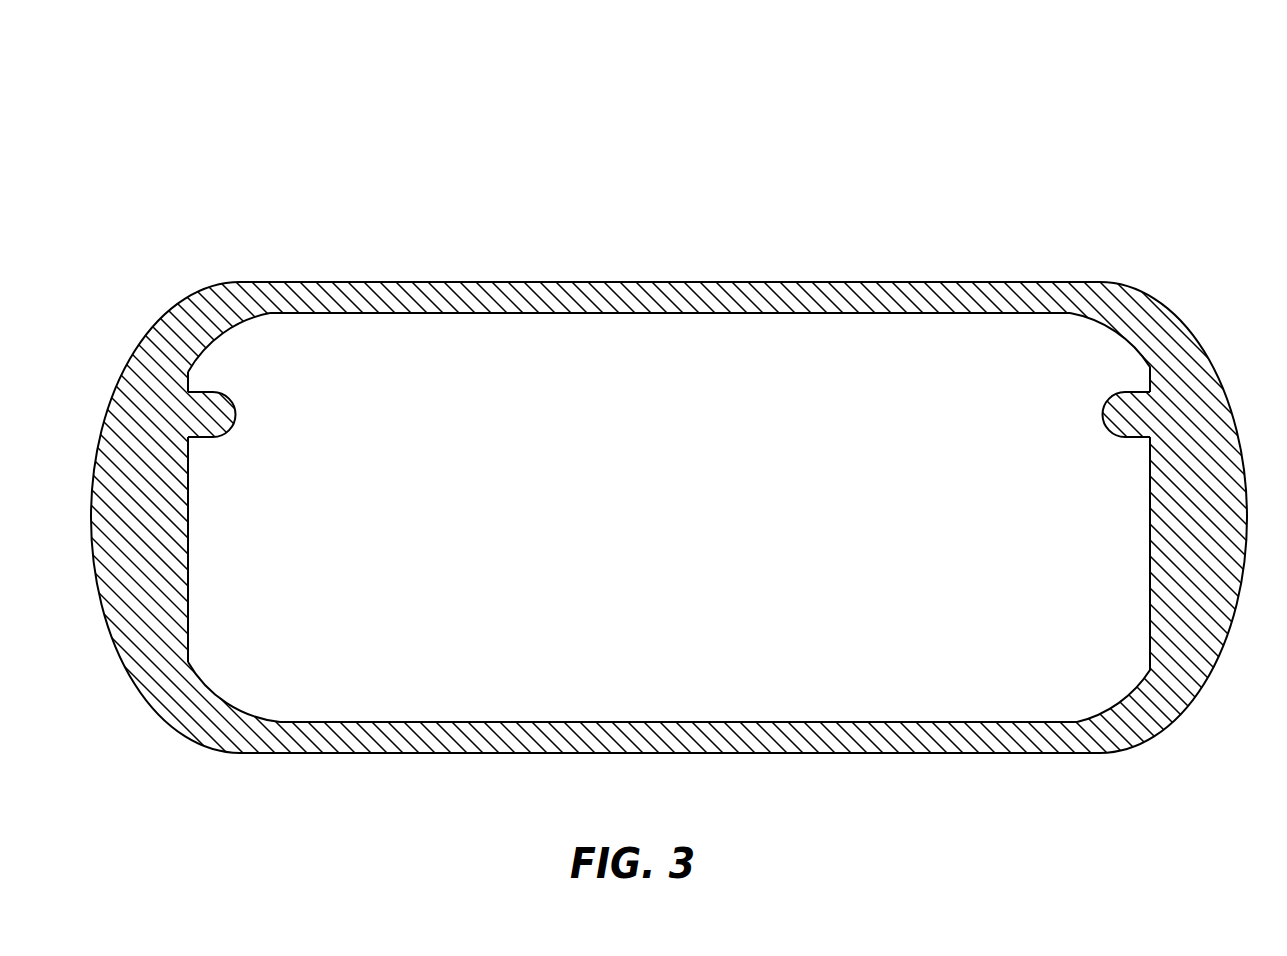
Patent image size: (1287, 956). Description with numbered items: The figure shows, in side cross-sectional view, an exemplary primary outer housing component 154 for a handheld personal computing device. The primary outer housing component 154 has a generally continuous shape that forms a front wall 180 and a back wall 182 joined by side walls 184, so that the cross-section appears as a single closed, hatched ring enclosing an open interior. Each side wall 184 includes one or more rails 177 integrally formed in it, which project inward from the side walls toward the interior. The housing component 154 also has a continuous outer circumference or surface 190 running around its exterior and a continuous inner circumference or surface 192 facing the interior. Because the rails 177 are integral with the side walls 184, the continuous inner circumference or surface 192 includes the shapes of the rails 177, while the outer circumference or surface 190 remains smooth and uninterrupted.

The primary outer housing component 154 is at (380, 145).
The rail 177 is at (233, 423).
The front wall 180 is at (789, 283).
The back wall 182 is at (592, 730).
The side wall 184 is at (142, 370).
The continuous outer circumference or surface 190 is at (356, 782).
The continuous inner circumference or surface 192 is at (428, 694).